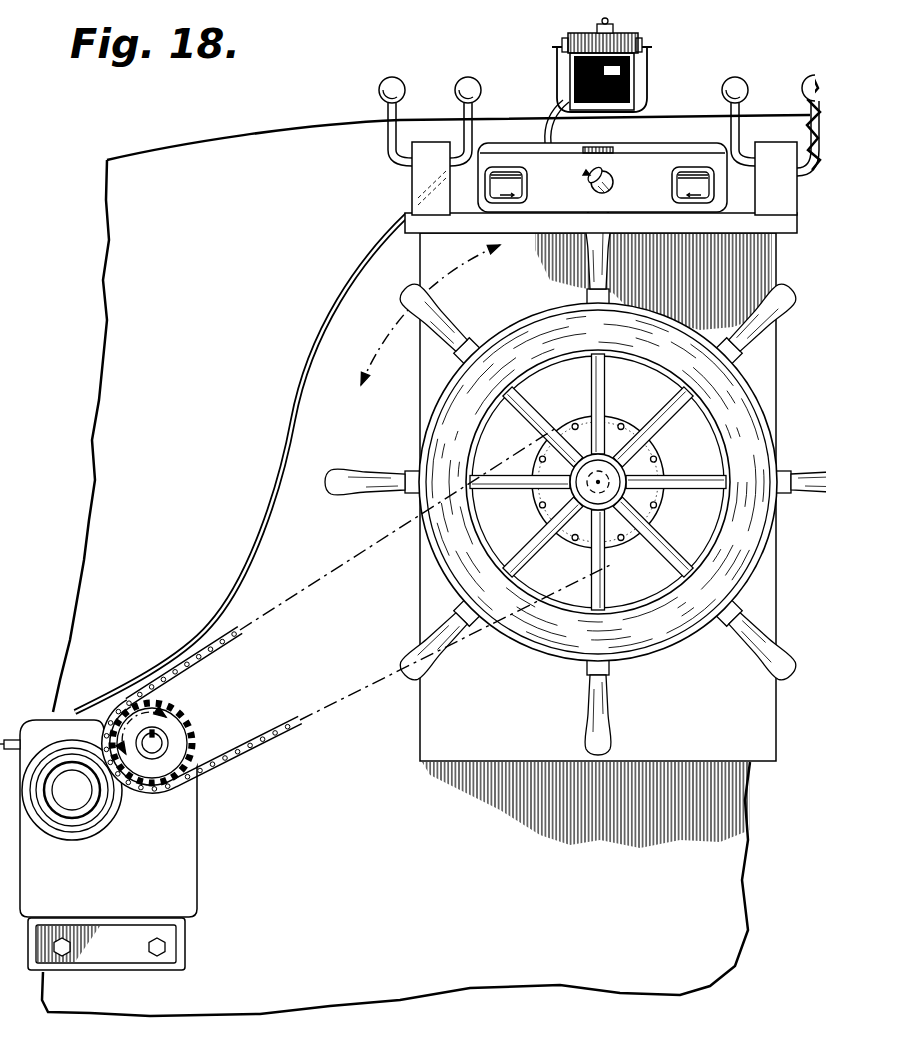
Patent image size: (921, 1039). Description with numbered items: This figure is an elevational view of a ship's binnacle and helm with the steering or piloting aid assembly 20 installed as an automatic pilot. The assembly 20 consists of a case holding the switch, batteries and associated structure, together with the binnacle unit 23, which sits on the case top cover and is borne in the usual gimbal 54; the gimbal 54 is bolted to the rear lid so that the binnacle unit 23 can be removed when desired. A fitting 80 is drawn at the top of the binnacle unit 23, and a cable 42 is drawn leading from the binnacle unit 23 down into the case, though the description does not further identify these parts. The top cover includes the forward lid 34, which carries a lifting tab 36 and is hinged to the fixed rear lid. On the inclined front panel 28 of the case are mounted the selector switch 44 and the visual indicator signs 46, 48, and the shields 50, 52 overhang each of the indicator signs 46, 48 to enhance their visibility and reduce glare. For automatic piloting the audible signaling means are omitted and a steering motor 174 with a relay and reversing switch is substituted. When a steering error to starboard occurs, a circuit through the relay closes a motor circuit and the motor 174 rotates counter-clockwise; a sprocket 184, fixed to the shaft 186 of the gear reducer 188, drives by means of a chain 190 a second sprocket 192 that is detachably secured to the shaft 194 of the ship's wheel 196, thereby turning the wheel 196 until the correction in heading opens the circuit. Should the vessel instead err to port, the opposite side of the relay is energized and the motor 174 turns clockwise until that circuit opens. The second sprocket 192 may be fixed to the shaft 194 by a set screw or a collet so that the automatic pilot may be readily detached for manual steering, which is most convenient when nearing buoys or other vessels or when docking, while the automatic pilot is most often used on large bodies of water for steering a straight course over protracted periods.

The steering or piloting aid assembly 20 is at (599, 125).
The binnacle unit 23 is at (627, 63).
The inclined front panel 28 is at (666, 163).
The forward lid 34 is at (535, 134).
The lifting tab 36 is at (601, 150).
The compass cable 42 is at (572, 86).
The selector switch 44 is at (612, 187).
The visual indicator sign 46 is at (492, 201).
The visual indicator sign 48 is at (716, 191).
The shield 50 is at (508, 181).
The shield 52 is at (715, 161).
The gimbal 54 is at (558, 66).
The compass adjusting knob 80 is at (610, 24).
The steering motor 174 is at (74, 794).
The sprocket 184 is at (191, 742).
The shaft 186 is at (150, 750).
The gear reducer 188 is at (195, 842).
The chain 190 is at (245, 743).
The second sprocket 192 is at (549, 503).
The shaft of the ship's wheel 194 is at (654, 509).
The ship's wheel 196 is at (598, 482).